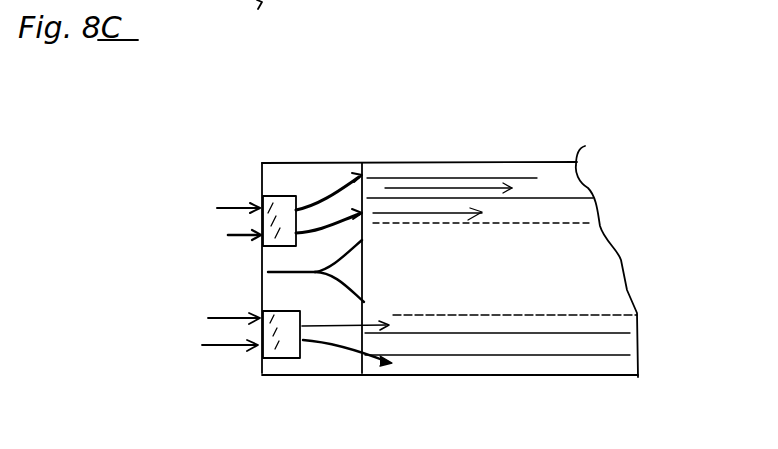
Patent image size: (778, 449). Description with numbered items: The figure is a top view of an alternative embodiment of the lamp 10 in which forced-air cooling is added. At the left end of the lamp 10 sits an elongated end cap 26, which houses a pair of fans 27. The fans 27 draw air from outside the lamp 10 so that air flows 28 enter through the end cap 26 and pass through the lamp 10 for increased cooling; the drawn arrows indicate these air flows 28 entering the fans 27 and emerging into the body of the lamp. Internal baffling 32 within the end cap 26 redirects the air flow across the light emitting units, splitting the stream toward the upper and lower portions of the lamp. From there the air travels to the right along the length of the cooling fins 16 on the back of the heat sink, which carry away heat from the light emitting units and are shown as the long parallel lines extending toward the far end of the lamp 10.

The lamp 10 is at (296, 131).
The cooling fins 16 is at (550, 200).
The elongated end cap 26 is at (293, 286).
The fans 27 is at (262, 198).
The air flows 28 is at (222, 346).
The internal baffling 32 is at (268, 272).